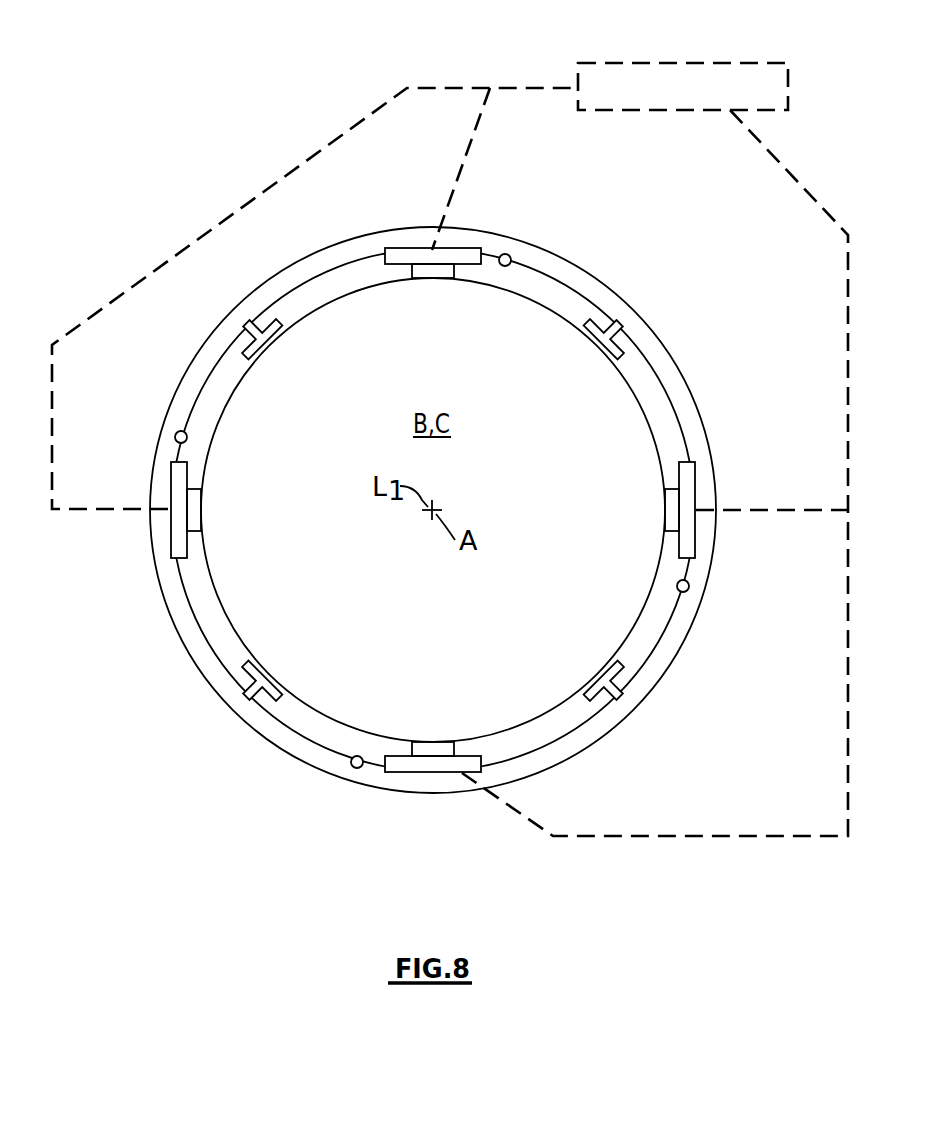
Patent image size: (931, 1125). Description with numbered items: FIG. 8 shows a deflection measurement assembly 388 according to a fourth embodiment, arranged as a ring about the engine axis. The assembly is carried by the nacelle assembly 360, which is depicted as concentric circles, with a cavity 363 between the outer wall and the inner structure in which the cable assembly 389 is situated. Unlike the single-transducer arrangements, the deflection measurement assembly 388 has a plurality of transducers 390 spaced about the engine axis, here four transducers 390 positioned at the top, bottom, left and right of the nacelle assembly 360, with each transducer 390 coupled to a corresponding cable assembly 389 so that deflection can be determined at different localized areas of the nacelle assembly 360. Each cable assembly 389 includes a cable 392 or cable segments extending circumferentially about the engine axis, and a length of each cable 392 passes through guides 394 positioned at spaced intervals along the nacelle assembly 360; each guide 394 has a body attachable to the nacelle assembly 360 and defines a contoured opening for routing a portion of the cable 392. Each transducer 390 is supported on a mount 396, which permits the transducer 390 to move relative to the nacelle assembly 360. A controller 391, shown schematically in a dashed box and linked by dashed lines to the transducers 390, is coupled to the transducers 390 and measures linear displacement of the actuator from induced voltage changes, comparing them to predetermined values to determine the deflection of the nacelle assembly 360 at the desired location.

The nacelle assembly 360 is at (691, 360).
The cavity 363 is at (686, 413).
The deflection measurement assembly 388 is at (100, 211).
The cable assembly 389 is at (174, 392).
The transducer 390 is at (417, 248).
The controller 391 is at (726, 63).
The cable 392 is at (302, 283).
The guide 394 is at (250, 330).
The mount 396 is at (409, 278).